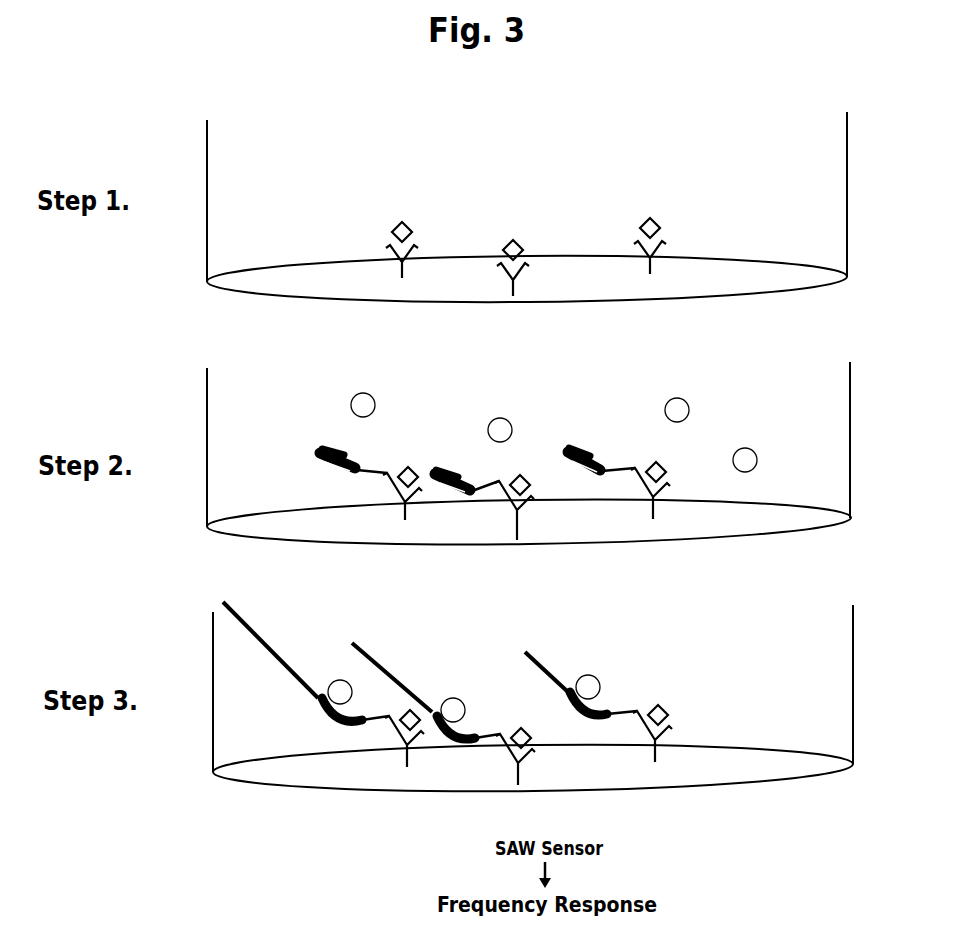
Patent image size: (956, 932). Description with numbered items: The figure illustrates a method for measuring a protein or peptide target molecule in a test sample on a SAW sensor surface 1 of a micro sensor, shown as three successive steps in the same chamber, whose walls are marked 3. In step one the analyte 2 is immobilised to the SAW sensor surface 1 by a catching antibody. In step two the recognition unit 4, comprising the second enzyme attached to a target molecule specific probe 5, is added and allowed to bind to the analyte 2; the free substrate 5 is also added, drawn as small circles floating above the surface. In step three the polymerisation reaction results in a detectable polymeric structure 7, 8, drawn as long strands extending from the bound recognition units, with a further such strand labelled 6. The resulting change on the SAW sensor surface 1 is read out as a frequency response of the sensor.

The SAW sensor surface 1 is at (530, 523).
The analyte 2 is at (527, 501).
The sample chamber wall 3 is at (530, 442).
The recognition unit 4 is at (478, 586).
The target molecule specific probe 5 is at (542, 557).
The short labeled secondary probe 6 is at (572, 672).
The polymeric structure 7 is at (400, 677).
The polymeric structure 8 is at (274, 650).